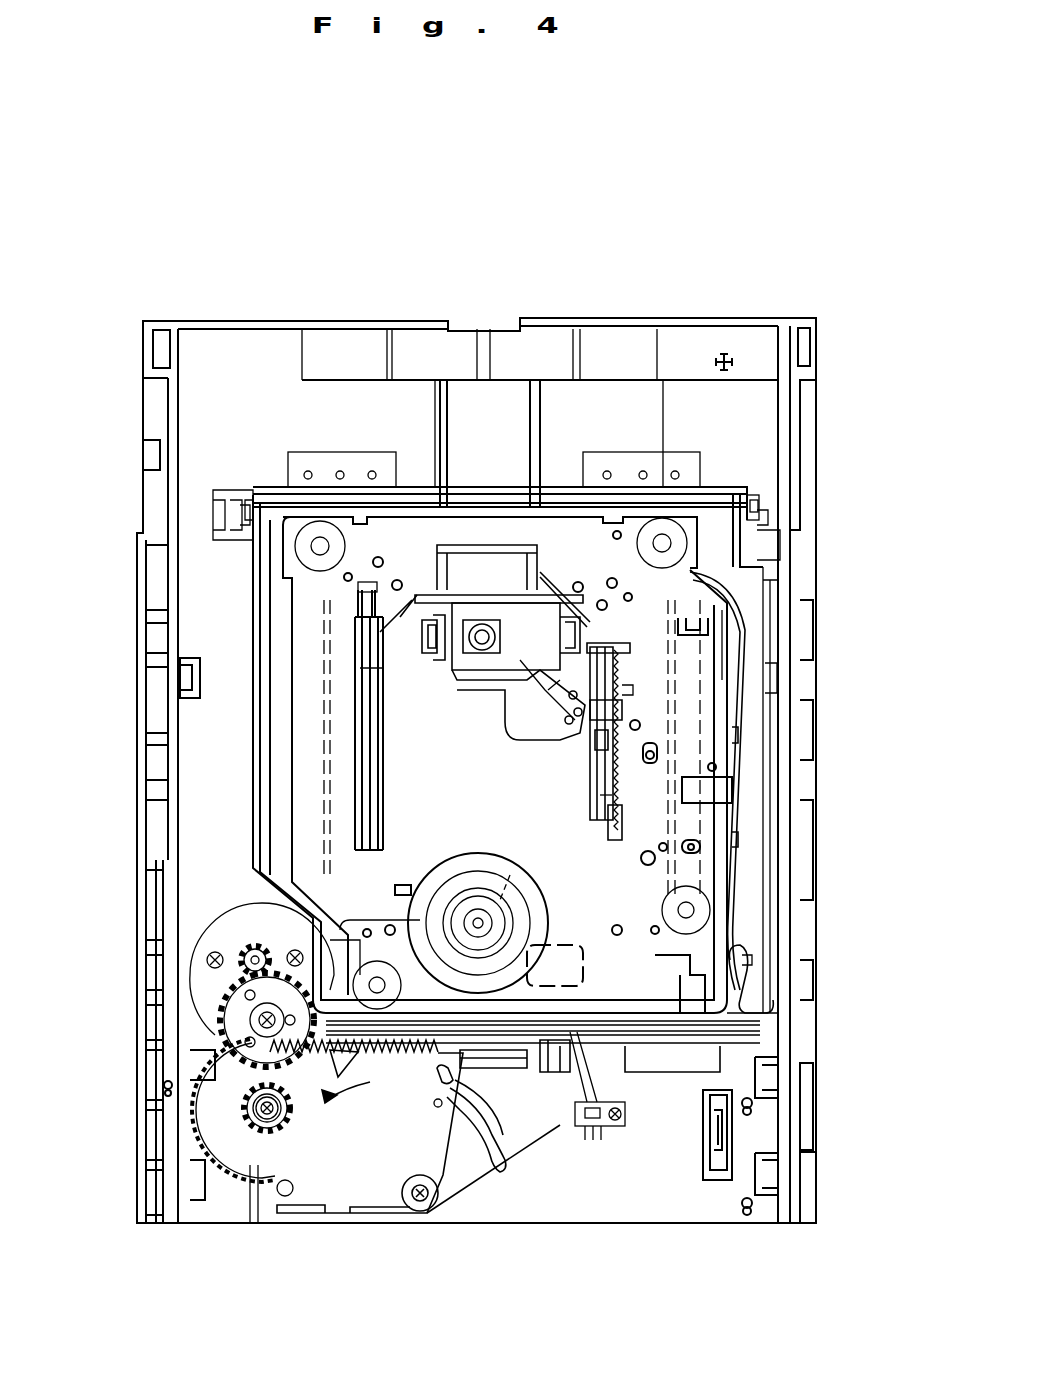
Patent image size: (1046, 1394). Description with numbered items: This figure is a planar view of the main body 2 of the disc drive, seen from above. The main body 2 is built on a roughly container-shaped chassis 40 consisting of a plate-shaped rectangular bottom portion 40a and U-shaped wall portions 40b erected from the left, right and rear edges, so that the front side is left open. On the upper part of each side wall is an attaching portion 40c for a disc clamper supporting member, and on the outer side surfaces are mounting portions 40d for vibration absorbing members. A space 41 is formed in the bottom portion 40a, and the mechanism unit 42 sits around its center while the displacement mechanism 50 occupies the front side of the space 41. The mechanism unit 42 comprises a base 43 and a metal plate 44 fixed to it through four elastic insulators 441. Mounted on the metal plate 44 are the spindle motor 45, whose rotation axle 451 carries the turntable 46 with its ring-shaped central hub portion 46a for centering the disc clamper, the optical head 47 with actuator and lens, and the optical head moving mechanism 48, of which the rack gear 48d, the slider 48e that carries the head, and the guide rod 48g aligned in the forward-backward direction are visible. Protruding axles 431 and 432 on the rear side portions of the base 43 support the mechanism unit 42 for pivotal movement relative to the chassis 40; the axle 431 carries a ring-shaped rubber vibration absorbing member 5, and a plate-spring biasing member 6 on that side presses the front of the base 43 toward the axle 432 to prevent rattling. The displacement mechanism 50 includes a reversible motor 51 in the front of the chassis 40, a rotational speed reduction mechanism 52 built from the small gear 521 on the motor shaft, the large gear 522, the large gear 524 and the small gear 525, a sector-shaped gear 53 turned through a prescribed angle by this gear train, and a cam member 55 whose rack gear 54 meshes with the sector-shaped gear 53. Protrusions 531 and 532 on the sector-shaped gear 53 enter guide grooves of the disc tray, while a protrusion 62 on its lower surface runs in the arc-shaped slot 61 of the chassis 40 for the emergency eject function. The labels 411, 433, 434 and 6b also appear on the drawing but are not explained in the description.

The main body 2 is at (546, 272).
The chassis 40 is at (622, 318).
The bottom portion 40a is at (265, 350).
The wall portions 40b is at (170, 740).
The attaching portion 40c is at (160, 888).
The mounting portions 40d is at (135, 448).
The space 41 is at (570, 500).
The side wall 411 is at (262, 775).
The mechanism unit 42 is at (257, 633).
The base 43 is at (402, 500).
The protruding axle 431 is at (775, 505).
The protruding axle 432 is at (240, 520).
The engagement piece 433 is at (775, 528).
The engagement piece 434 is at (245, 535).
The metal plate 44 is at (595, 535).
The insulators 441 is at (320, 530).
The spindle motor 45 is at (505, 895).
The rotation axle 451 is at (478, 920).
The turntable 46 is at (485, 860).
The central hub portion 46a is at (510, 915).
The optical head 47 is at (475, 648).
The optical head moving mechanism 48 is at (626, 693).
The rack gear 48d is at (636, 660).
The slider 48e is at (545, 685).
The guide rod 48g is at (600, 793).
The vibration absorbing member 5 is at (748, 495).
The displacement mechanism 50 is at (230, 1188).
The motor 51 is at (210, 943).
The small gear 521 is at (245, 975).
The rotational speed reduction mechanism 52 is at (190, 1103).
The large gear 522 is at (220, 1030).
The large gear 524 is at (245, 1140).
The small gear 525 is at (237, 1113).
The sector-shaped gear 53 is at (378, 1183).
The protrusion 531 is at (286, 1197).
The protrusion 532 is at (540, 1050).
The rack gear 54 is at (385, 1055).
The cam member 55 is at (560, 1133).
The biasing member 6 is at (752, 1000).
The spring end 6b is at (748, 970).
The arc-shaped slot 61 is at (495, 1170).
The protrusion 62 is at (438, 1108).